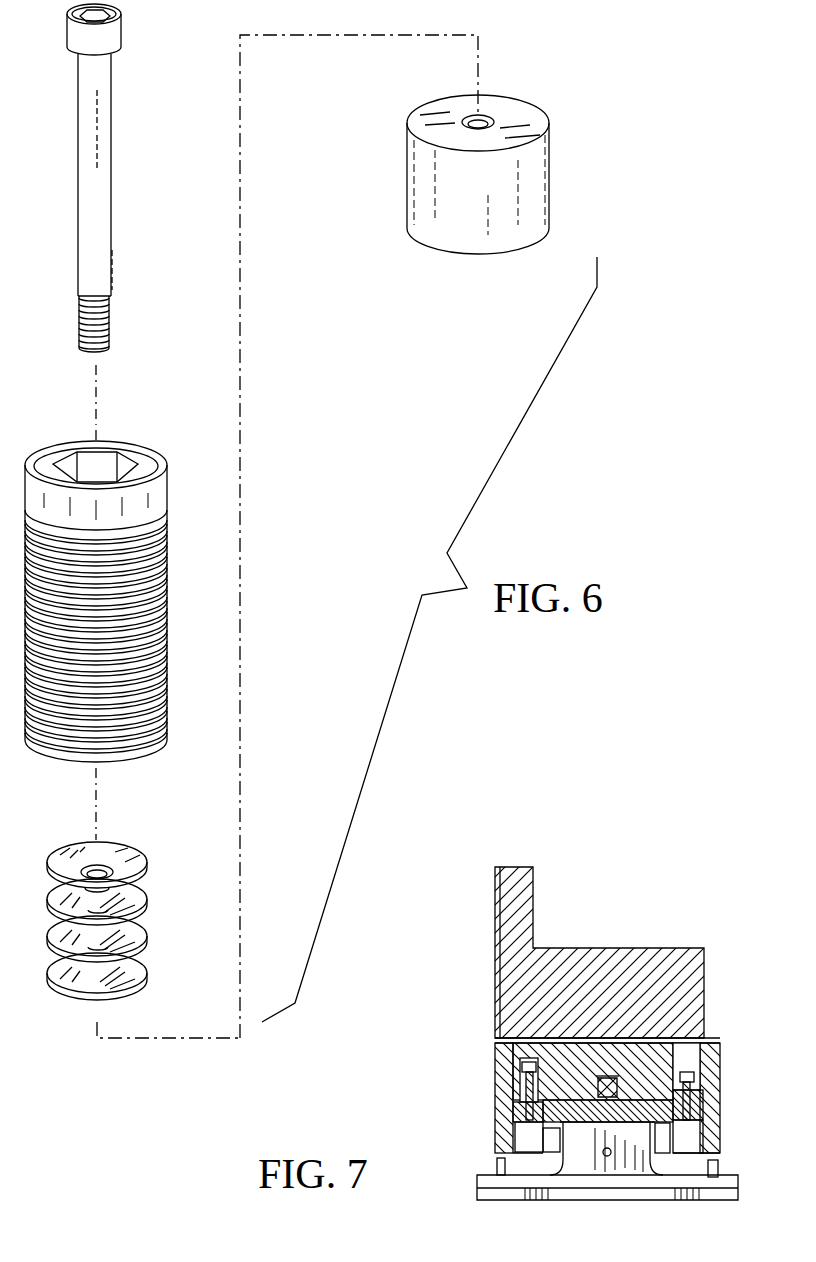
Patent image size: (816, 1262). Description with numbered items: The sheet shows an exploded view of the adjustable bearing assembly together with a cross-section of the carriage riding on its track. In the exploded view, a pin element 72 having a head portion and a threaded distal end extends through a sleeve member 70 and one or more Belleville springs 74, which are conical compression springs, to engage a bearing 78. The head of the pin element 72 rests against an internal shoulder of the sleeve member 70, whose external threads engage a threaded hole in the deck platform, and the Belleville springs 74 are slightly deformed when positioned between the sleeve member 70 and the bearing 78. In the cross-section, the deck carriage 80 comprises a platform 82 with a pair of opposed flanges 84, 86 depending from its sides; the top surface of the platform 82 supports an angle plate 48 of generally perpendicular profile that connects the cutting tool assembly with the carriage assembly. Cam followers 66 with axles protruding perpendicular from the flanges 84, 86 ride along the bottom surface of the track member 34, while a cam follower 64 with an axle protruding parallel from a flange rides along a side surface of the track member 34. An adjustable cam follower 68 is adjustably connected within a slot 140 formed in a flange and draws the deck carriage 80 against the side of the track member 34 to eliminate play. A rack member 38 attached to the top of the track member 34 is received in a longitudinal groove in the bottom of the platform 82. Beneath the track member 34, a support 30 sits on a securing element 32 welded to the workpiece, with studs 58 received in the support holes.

In FIG. 6, the pin element 72 is at (95, 162).
In FIG. 6, the sleeve member 70 is at (167, 575).
In FIG. 6, the Belleville springs 74 is at (147, 932).
In FIG. 6, the bearing 78 is at (532, 182).
In FIG. 7, the angle plate 48 is at (505, 978).
In FIG. 7, the platform 82 is at (500, 1050).
In FIG. 7, the deck carriage 80 is at (500, 1075).
In FIG. 7, the slot 140 is at (690, 1048).
In FIG. 7, the flange 84 is at (500, 1108).
In FIG. 7, the rack member 38 is at (590, 1123).
In FIG. 7, the adjustable cam follower 68 is at (717, 1107).
In FIG. 7, the flange 86 is at (712, 1127).
In FIG. 7, the cam follower 64 is at (500, 1130).
In FIG. 7, the track member 34 is at (705, 1140).
In FIG. 7, the cam followers 66 is at (553, 1150).
In FIG. 7, the support 30 is at (648, 1180).
In FIG. 7, the securing element 32 is at (603, 1195).
In FIG. 7, the stud 58 is at (488, 1162).